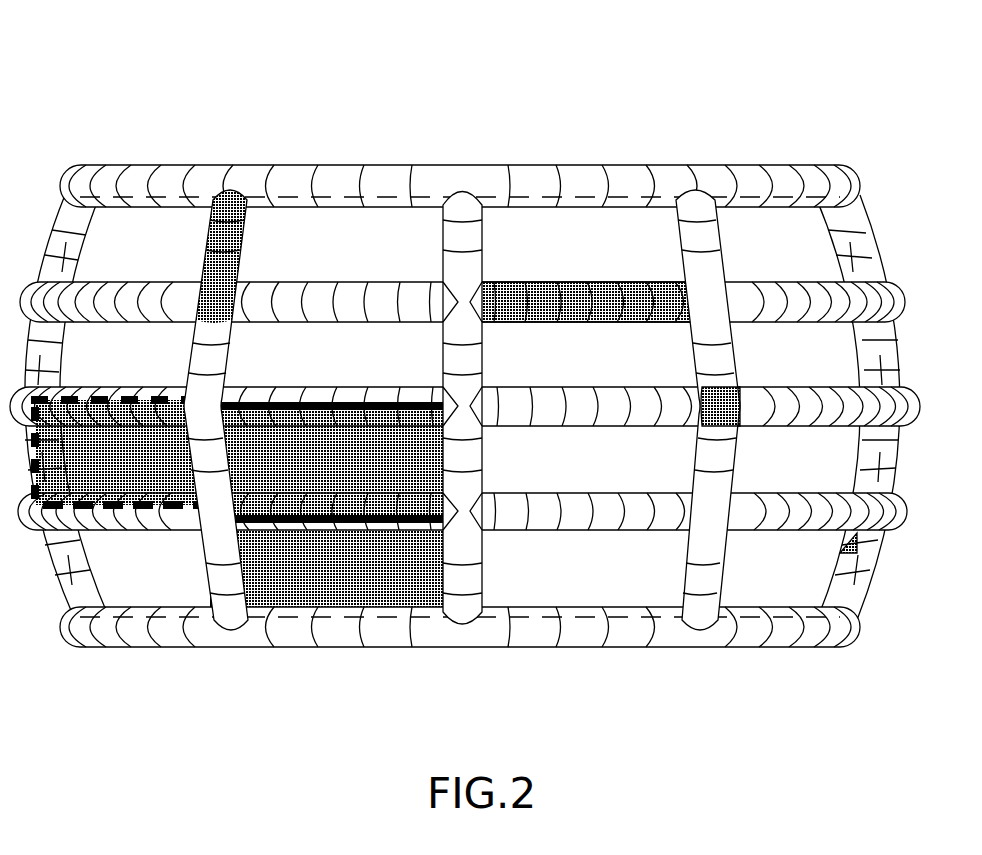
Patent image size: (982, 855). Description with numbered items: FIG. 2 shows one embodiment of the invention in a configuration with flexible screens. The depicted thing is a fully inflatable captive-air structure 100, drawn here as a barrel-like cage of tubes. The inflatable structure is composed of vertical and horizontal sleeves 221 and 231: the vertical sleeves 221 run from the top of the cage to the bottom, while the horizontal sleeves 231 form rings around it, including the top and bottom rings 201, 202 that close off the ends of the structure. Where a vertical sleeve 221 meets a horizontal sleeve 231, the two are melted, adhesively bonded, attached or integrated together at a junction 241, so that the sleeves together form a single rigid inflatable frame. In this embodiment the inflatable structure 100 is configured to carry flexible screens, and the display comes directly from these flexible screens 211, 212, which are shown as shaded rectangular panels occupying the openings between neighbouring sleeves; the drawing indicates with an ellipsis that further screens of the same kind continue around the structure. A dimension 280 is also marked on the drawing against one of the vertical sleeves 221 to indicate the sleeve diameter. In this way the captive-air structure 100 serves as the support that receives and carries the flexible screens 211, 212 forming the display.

The inflatable captive-air structure 100 is at (488, 82).
The first end ring 201 is at (143, 165).
The second end ring 202 is at (158, 607).
The flexible screen 211 is at (98, 250).
The flexible screen 212 is at (838, 257).
The vertical sleeve 221 is at (240, 240).
The horizontal sleeve 231 is at (570, 282).
The attachment of sleeves 241 is at (730, 408).
The strut diameter 280 is at (413, 581).